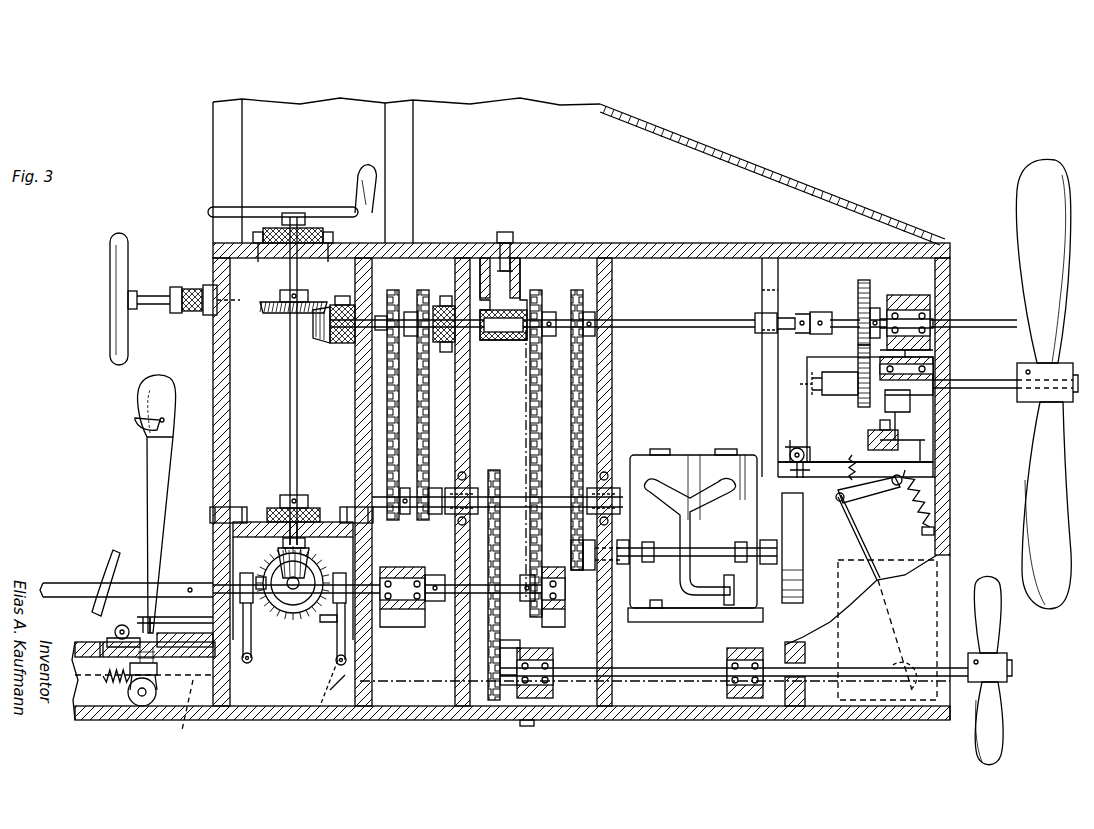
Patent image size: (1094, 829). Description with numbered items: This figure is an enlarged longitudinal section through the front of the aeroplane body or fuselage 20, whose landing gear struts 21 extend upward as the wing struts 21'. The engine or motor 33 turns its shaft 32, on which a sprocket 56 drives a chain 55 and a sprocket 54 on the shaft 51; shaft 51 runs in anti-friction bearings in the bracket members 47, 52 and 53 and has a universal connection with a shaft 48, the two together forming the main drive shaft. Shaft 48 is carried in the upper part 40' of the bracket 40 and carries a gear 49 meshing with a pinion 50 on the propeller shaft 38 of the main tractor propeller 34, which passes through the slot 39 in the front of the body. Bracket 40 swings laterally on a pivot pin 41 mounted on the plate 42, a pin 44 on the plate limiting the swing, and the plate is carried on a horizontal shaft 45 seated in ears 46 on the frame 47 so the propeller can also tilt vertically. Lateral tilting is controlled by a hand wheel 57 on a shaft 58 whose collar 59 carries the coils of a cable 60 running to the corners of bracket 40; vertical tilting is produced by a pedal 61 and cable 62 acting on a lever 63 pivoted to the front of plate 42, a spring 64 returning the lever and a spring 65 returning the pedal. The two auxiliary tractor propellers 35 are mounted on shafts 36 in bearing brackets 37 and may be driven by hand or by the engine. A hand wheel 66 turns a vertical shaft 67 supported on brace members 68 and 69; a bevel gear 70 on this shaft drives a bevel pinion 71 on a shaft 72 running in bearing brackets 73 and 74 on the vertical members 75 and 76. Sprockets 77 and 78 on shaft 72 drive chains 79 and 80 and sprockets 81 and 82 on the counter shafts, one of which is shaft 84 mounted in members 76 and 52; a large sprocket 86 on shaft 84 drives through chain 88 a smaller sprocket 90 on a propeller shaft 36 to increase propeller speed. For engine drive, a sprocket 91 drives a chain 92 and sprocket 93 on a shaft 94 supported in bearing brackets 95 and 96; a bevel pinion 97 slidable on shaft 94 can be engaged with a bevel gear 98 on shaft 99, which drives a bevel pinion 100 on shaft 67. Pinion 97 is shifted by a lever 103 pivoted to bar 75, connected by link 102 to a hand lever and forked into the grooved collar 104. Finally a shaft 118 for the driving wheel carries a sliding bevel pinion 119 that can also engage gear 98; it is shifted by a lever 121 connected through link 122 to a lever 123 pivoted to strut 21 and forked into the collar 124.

The body or fuselage 20 is at (720, 708).
The landing gear struts 21 is at (581, 481).
The wing struts 21' is at (406, 170).
The engine shaft 32 is at (620, 564).
The engine or motor 33 is at (695, 535).
The main tractor propeller 34 is at (1067, 432).
The auxiliary tractor propellers 35 is at (1000, 712).
The propeller shafts 36 is at (680, 660).
The brackets 37 is at (565, 655).
The propeller shaft 38 is at (995, 388).
The slot 39 is at (935, 360).
The bracket 40 is at (879, 409).
The upper part of bracket 40' is at (941, 332).
The pivot pin 41 is at (830, 410).
The plate 42 is at (928, 452).
The pin 44 is at (884, 424).
The horizontal shaft 45 is at (797, 478).
The ears 46 is at (795, 440).
The frame 47 is at (760, 357).
The shaft 48 is at (905, 295).
The gear 49 is at (866, 280).
The pinion 50 is at (858, 405).
The shaft 51 is at (640, 330).
The bracket member 52 is at (612, 272).
The bracket member 53 is at (520, 300).
The sprocket 54 is at (580, 290).
The chain 55 is at (570, 450).
The sprocket 56 is at (585, 570).
The hand wheel 57 is at (114, 268).
The shaft 58 is at (152, 292).
The collar 59 is at (182, 288).
The frame member 60 is at (200, 335).
The pedal 61 is at (105, 560).
The cable 62 is at (880, 545).
The lever 63 is at (866, 500).
The spring 64 is at (910, 520).
The spring 65 is at (120, 664).
The hand wheel 66 is at (312, 205).
The vertical shaft 67 is at (290, 366).
The brace bar 68 is at (320, 262).
The brace bar 69 is at (330, 480).
The bevel gear 70 is at (268, 318).
The bevel pinion 71 is at (320, 345).
The shaft 72 is at (393, 290).
The bearing bracket 73 is at (340, 345).
The bearing bracket 74 is at (444, 352).
The vertical brace bar 75 is at (363, 402).
The vertical brace bar 76 is at (462, 421).
The sprocket 77 is at (411, 312).
The sprocket 78 is at (427, 293).
The chain 79 is at (395, 350).
The chain 80 is at (420, 420).
The sprocket 81 is at (402, 488).
The sprocket 82 is at (436, 488).
The shaft 84 is at (525, 482).
The large sprocket 86 is at (492, 470).
The chain 88 is at (490, 655).
The small sprocket 90 is at (508, 685).
The sprocket 91 is at (542, 350).
The chain 92 is at (530, 410).
The sprocket 93 is at (527, 575).
The shaft 94 is at (470, 620).
The bearing bracket 95 is at (395, 627).
The bearing bracket 96 is at (565, 612).
The bevel pinion 97 is at (320, 622).
The bevel gear 98 is at (272, 620).
The shaft 99 is at (293, 583).
The bevel pinion 100 is at (312, 562).
The link 102 is at (312, 689).
The lever 103 is at (320, 720).
The collar 104 is at (343, 580).
The shaft 118 is at (170, 583).
The bevel pinion 119 is at (282, 560).
The lever 121 is at (152, 465).
The link 122 is at (190, 625).
The lever 123 is at (245, 680).
The collar 124 is at (246, 573).